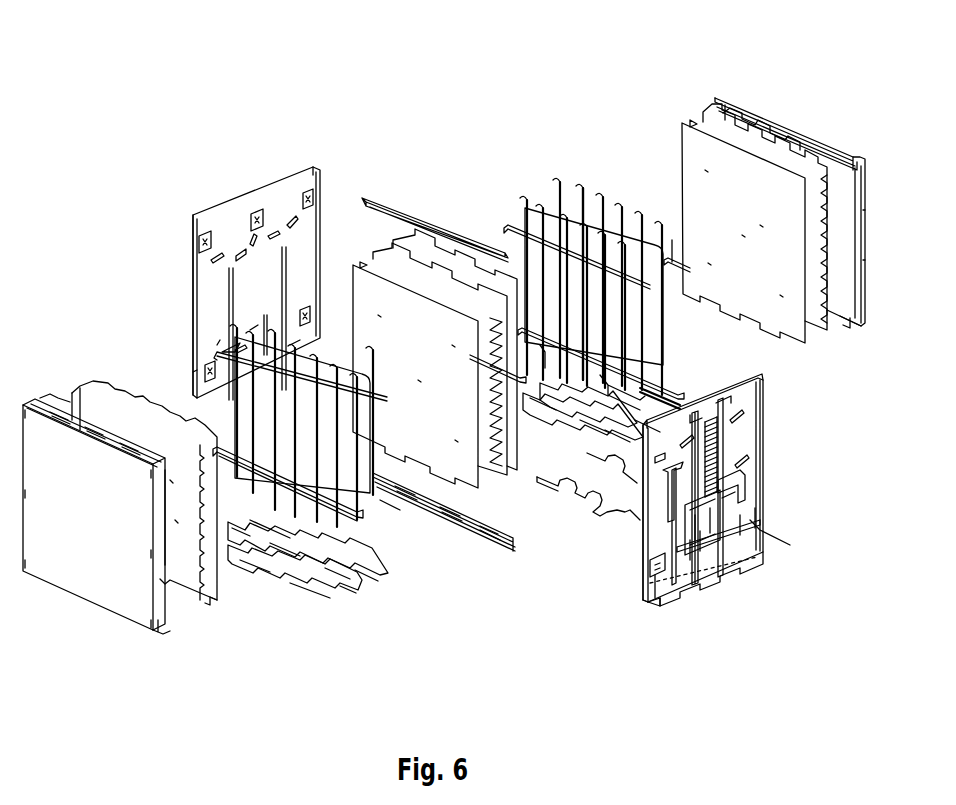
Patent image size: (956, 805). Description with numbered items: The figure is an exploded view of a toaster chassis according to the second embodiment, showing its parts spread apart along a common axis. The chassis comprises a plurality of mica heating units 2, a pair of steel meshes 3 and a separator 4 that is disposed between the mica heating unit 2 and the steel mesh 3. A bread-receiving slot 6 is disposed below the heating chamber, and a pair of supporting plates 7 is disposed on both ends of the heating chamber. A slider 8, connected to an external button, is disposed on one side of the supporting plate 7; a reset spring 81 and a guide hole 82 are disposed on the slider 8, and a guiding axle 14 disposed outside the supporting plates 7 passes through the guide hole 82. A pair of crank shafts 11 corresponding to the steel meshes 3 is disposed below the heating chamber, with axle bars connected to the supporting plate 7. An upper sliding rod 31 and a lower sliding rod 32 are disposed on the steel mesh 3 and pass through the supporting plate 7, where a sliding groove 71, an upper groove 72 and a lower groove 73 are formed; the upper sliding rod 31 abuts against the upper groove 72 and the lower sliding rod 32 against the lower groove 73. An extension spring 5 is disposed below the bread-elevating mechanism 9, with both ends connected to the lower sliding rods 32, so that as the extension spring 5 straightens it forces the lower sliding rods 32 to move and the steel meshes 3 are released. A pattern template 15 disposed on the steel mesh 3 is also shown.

The mica heating unit 2 is at (822, 280).
The steel mesh 3 is at (527, 207).
The separator 4 is at (777, 245).
The extension spring 5 is at (355, 505).
The bread-receiving slot 6 is at (343, 555).
The supporting plate 7 is at (752, 420).
The slider 8 is at (735, 488).
The bread-elevating mechanism 9 is at (590, 512).
The crank shaft 11 is at (240, 537).
The guiding axle 14 is at (700, 495).
The pattern template 15 is at (582, 208).
The upper sliding rod 31 is at (674, 262).
The lower sliding rod 32 is at (295, 495).
The sliding groove 71 is at (675, 507).
The upper groove 72 is at (317, 213).
The lower groove 73 is at (642, 582).
The reset spring 81 is at (730, 460).
The guide hole 82 is at (697, 538).